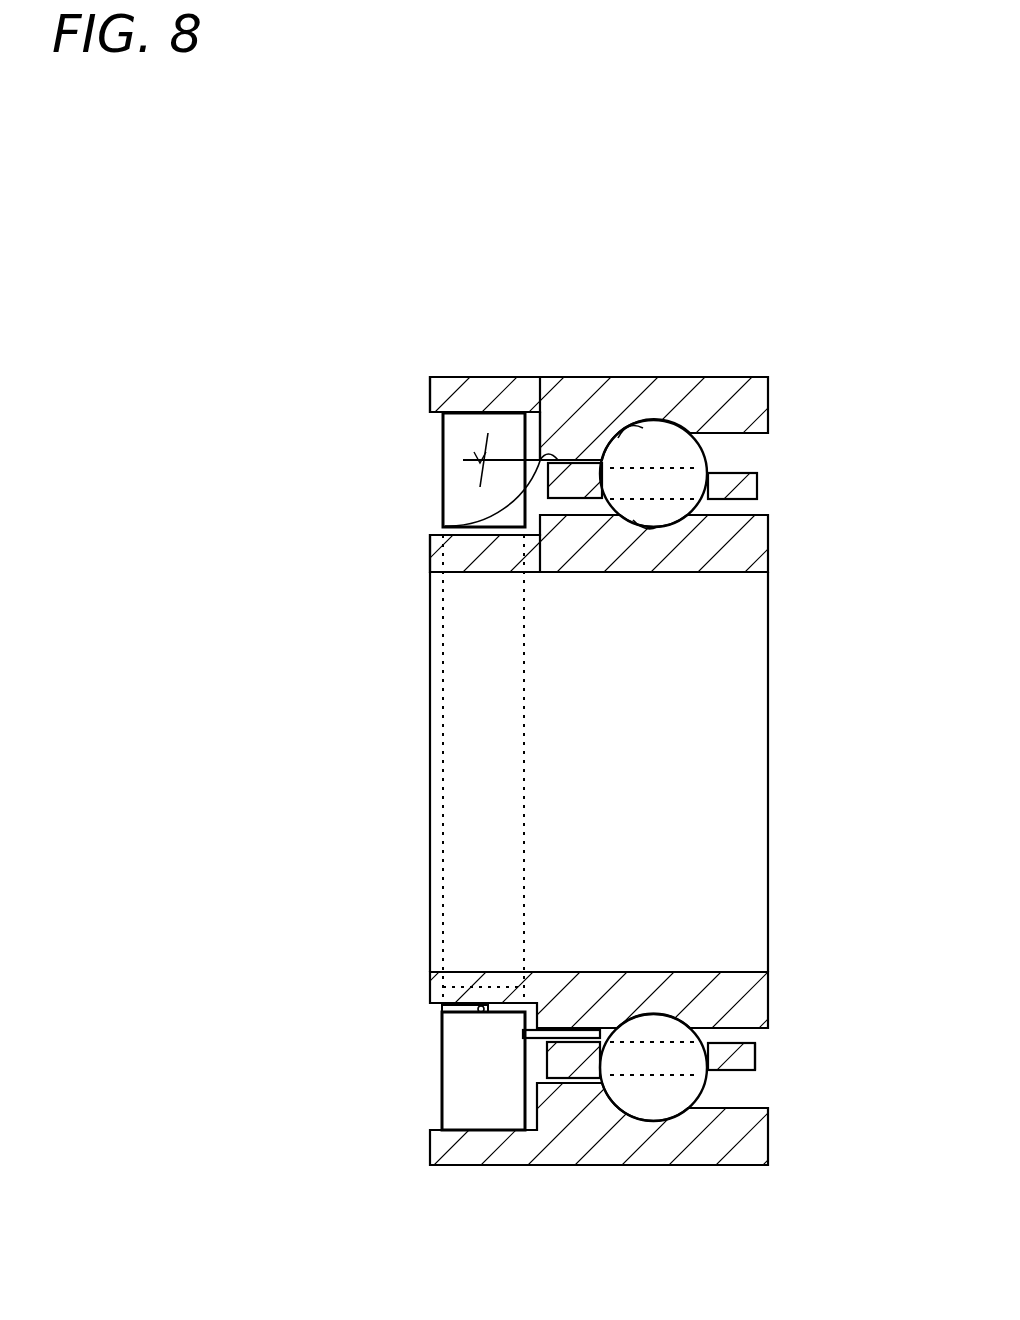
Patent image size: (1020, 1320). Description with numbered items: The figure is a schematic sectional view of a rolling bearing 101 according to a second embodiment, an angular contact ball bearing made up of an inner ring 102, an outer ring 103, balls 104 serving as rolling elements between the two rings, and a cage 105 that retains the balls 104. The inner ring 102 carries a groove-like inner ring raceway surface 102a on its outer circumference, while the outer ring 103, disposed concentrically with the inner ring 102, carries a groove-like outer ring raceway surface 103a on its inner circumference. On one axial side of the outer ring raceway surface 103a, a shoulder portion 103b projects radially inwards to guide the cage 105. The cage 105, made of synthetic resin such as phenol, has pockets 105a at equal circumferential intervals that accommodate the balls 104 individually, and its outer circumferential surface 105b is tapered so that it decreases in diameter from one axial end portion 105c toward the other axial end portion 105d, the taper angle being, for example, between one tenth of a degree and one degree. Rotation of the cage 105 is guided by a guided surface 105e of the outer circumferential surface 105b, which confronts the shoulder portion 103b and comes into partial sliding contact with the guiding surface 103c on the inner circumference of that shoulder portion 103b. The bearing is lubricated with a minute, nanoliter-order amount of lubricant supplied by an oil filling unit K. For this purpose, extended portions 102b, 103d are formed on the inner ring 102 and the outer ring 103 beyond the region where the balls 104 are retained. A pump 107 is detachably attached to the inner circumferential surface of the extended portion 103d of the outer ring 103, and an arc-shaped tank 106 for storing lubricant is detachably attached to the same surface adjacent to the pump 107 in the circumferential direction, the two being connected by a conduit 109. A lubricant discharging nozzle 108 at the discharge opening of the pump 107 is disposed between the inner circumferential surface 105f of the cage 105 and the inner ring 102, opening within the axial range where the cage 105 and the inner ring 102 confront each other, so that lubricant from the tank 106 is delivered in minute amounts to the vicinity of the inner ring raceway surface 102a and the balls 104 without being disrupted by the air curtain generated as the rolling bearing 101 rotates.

The rolling bearing 101 is at (397, 398).
The inner ring 102 is at (747, 555).
The inner ring raceway surface 102a is at (656, 527).
The extended portion 102b is at (480, 555).
The outer ring 103 is at (727, 383).
The outer ring raceway surface 103a is at (620, 433).
The shoulder portion 103b is at (588, 445).
The guiding surface 103c is at (593, 457).
The extended portion 103d is at (487, 388).
The balls 104 is at (680, 453).
The cage 105 is at (757, 484).
The pockets 105a is at (705, 507).
The outer circumferential surface 105b is at (703, 1070).
The one axial end portion 105c is at (553, 1085).
The other axial end portion 105d is at (712, 1072).
The guided surface 105e is at (443, 526).
The inner circumferential surface 105f is at (733, 1037).
The tank 106 is at (470, 733).
The pump 107 is at (467, 1105).
The lubricant discharging nozzle 108 is at (533, 1032).
The conduit 109 is at (478, 1009).
The oil filling unit K is at (432, 478).